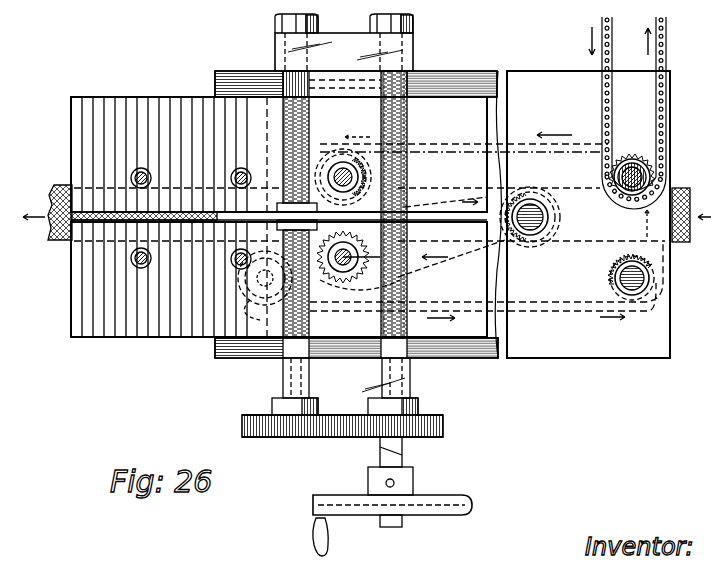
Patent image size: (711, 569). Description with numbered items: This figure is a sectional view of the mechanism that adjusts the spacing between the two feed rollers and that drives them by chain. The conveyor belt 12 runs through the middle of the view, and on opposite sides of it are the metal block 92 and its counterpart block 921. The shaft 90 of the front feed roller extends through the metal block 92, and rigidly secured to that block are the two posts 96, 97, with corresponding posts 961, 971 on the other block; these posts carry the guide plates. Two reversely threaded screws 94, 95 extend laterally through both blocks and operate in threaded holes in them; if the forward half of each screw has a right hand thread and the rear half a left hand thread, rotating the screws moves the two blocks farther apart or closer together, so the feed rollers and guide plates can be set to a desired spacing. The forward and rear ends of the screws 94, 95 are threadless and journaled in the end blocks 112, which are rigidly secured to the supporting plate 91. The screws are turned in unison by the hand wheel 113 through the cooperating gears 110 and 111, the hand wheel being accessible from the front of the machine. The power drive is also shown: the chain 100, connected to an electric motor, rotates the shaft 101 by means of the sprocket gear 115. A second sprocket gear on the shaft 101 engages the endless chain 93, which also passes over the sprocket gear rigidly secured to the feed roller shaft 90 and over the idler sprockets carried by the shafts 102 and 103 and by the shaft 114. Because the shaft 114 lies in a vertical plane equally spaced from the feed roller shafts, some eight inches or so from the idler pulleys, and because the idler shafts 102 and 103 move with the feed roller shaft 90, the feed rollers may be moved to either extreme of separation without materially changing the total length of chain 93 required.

The conveyor belt 12 is at (63, 242).
The shaft 90 is at (398, 250).
The supporting plate 91 is at (398, 173).
The metal block 92 is at (80, 307).
The upper jaw block 921 is at (79, 148).
The endless chain 93 is at (572, 308).
The reversely threaded screw 94 is at (283, 80).
The reversely threaded screw 95 is at (407, 78).
The post 96 is at (131, 261).
The guide pin 961 is at (131, 178).
The post 97 is at (235, 268).
The guide pin 971 is at (237, 168).
The chain 100 is at (600, 100).
The shaft 101 is at (620, 165).
The shaft 102 is at (240, 313).
The shaft 103 is at (613, 272).
The gear 110 is at (272, 410).
The gear 111 is at (443, 428).
The end block 112 is at (340, 42).
The hand wheel 113 is at (351, 495).
The shaft 114 is at (535, 222).
The sprocket gear 115 is at (643, 150).